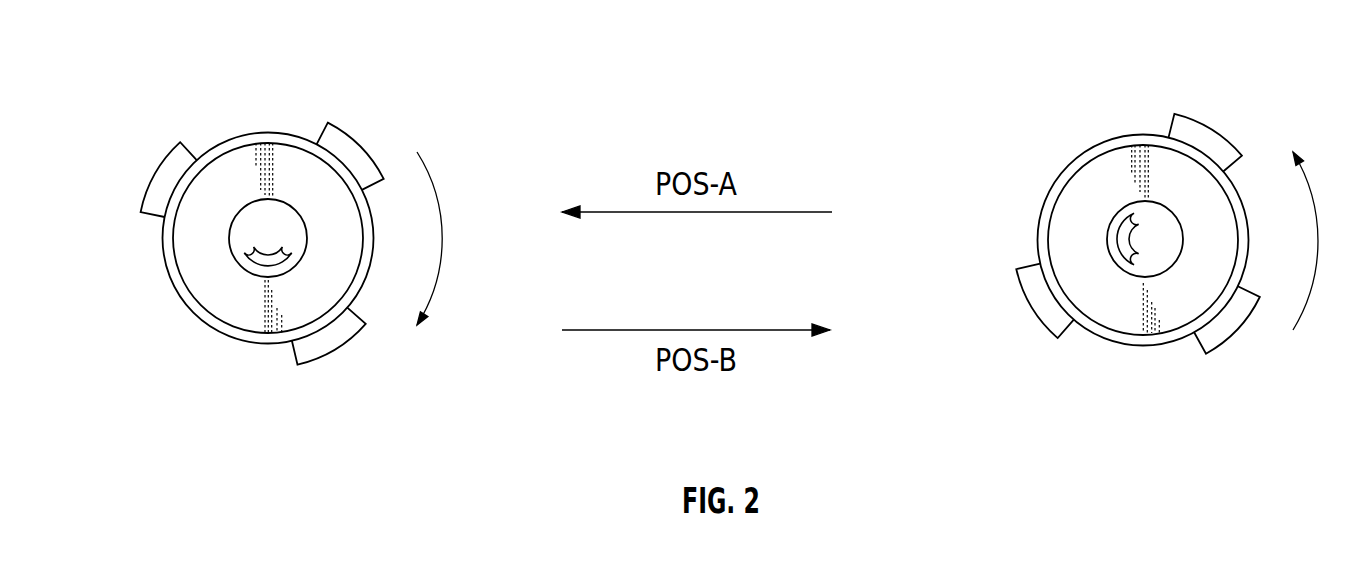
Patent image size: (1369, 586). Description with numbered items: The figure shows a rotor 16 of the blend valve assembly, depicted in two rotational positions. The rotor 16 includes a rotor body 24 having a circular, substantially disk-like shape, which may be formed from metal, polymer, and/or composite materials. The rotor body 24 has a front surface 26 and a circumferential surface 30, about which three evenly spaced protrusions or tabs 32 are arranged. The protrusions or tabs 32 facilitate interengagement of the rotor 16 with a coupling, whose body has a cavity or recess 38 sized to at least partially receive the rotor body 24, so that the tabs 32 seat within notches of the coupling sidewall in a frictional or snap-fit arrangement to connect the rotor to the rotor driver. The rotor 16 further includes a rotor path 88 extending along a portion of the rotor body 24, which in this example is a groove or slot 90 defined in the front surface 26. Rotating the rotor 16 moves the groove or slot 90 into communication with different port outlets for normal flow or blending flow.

The rotor 16 is at (163, 245).
The rotor body 24 is at (255, 137).
The front surface 26 is at (347, 243).
The circumferential surface 30 is at (195, 320).
The protrusions or tabs 32 is at (180, 142).
The cavity or recess 38 is at (282, 280).
The rotor path 88 is at (288, 262).
The groove or slot 90 is at (250, 252).